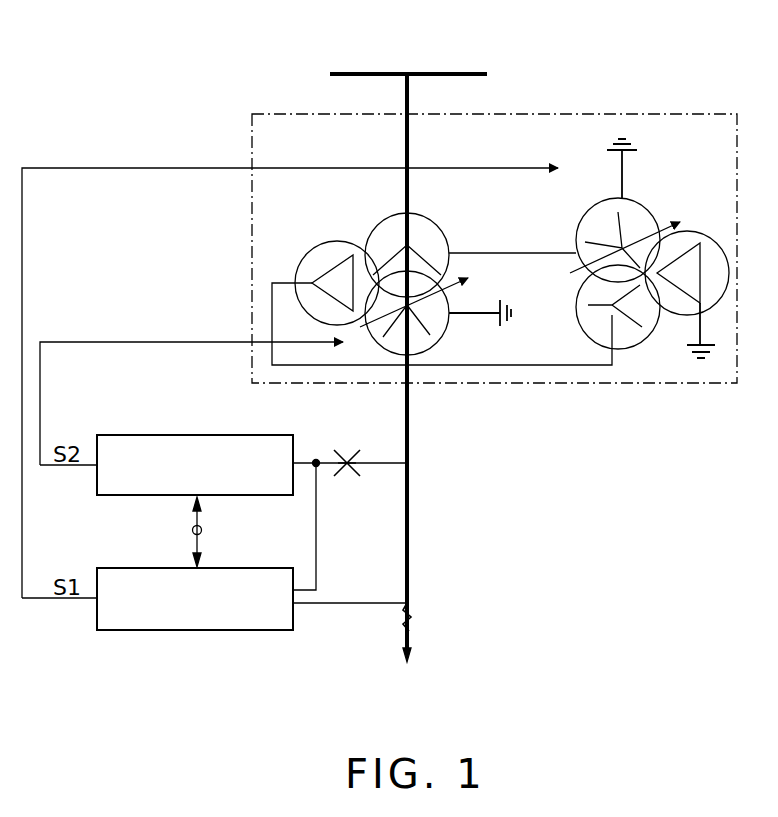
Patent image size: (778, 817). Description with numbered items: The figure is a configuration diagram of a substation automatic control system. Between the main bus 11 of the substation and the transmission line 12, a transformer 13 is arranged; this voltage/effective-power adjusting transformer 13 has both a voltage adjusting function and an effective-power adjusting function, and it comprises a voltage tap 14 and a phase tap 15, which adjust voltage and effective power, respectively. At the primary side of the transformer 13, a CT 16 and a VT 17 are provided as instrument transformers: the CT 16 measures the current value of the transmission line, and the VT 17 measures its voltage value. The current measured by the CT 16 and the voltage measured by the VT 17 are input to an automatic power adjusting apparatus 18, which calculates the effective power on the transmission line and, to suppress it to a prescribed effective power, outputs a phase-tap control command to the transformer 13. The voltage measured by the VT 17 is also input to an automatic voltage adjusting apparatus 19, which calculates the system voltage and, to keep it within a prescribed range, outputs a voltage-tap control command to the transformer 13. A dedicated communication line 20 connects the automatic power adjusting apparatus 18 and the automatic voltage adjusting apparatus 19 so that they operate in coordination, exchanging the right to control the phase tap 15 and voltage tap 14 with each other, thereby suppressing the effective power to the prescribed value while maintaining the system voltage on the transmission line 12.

The main bus 11 is at (453, 71).
The transmission line 12 is at (410, 525).
The transformer 13 is at (575, 110).
The voltage tap 14 is at (443, 340).
The phase tap 15 is at (645, 200).
The CT 16 is at (411, 608).
The VT 17 is at (347, 478).
The automatic power adjusting apparatus 18 is at (147, 565).
The automatic voltage adjusting apparatus 19 is at (187, 432).
The dedicated communication line 20 is at (202, 530).